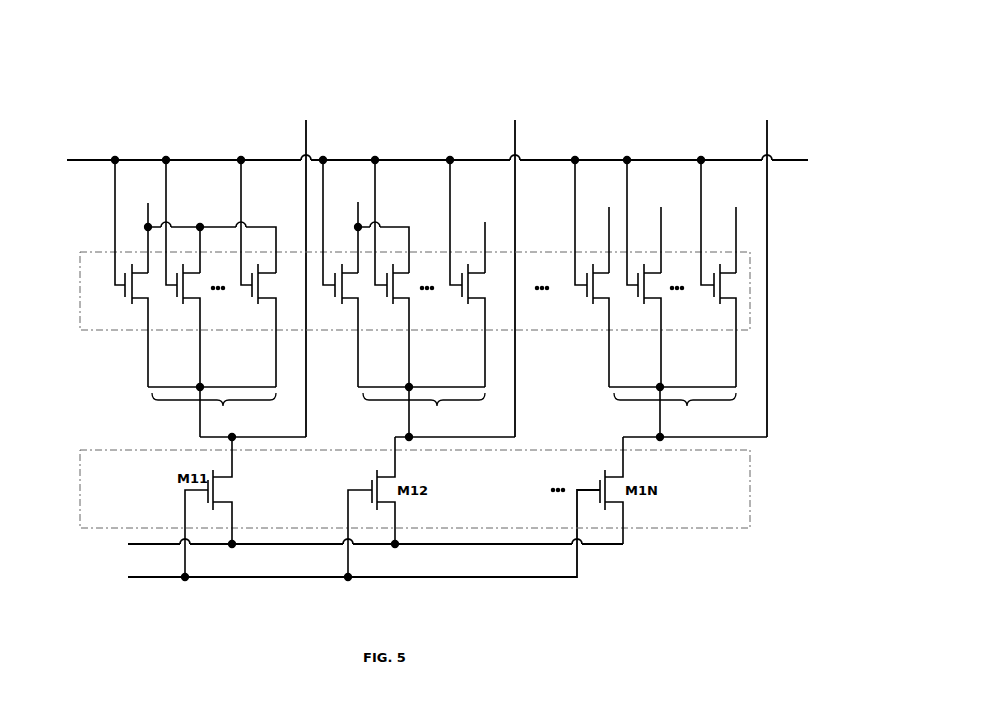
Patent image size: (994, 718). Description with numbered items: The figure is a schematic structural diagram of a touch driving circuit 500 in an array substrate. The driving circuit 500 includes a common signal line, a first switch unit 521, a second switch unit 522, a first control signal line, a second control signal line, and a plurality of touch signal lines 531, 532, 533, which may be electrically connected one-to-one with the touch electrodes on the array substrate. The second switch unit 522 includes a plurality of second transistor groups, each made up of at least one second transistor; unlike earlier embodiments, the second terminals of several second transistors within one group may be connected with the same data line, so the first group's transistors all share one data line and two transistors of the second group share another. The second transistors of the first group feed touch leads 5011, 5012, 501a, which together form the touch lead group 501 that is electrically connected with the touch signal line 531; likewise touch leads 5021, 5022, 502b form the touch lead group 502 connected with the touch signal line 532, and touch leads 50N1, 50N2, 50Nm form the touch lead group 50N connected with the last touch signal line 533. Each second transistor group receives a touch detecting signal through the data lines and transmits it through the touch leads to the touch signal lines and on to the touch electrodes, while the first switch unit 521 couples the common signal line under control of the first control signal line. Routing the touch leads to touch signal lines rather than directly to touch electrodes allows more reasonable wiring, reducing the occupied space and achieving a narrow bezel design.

The touch driving circuit 500 is at (788, 43).
The touch signal line 531 is at (308, 137).
The touch signal line 532 is at (517, 137).
The touch signal line 533 is at (769, 137).
The first switch unit 521 is at (753, 490).
The second switch unit 522 is at (753, 290).
The touch lead group 501 is at (227, 412).
The touch lead 5011 is at (145, 357).
The touch lead 5012 is at (202, 352).
The touch lead 501a is at (272, 383).
The touch lead group 502 is at (436, 412).
The touch lead 5021 is at (357, 375).
The touch lead 5022 is at (415, 352).
The touch lead 502b is at (483, 383).
The touch lead group 50N is at (688, 412).
The touch lead 50N1 is at (605, 356).
The touch lead 50N2 is at (665, 352).
The touch lead 50Nm is at (735, 383).